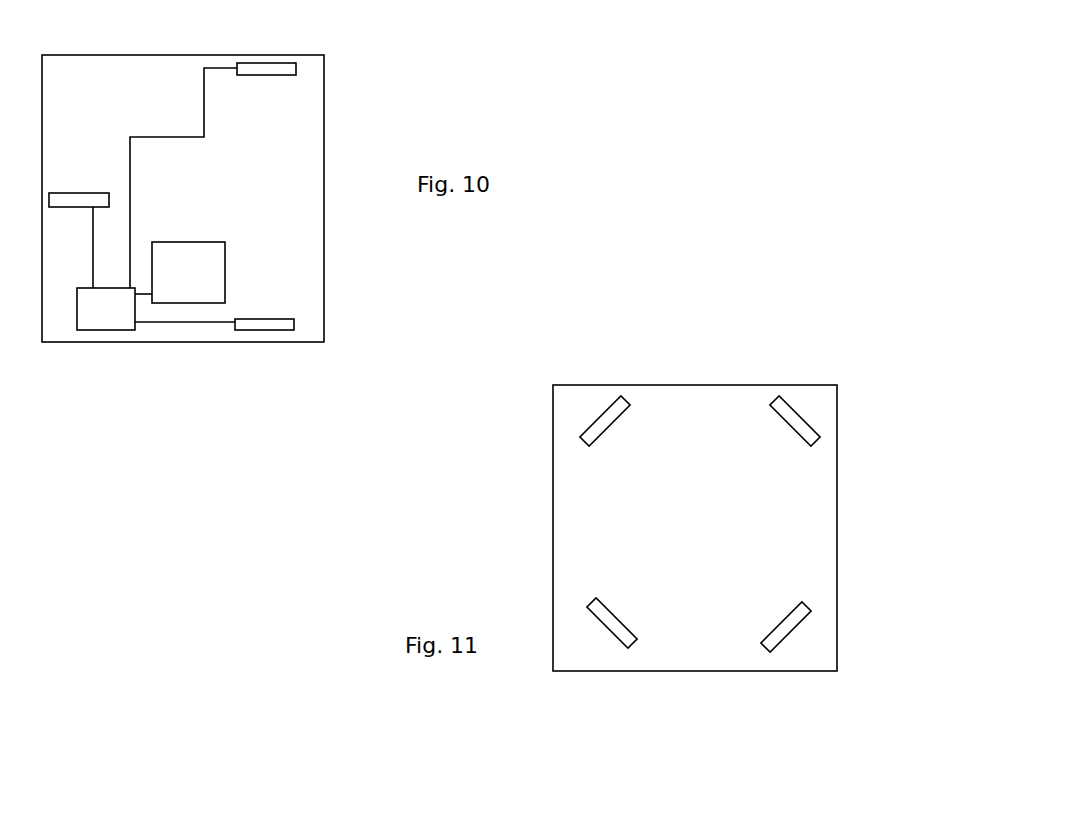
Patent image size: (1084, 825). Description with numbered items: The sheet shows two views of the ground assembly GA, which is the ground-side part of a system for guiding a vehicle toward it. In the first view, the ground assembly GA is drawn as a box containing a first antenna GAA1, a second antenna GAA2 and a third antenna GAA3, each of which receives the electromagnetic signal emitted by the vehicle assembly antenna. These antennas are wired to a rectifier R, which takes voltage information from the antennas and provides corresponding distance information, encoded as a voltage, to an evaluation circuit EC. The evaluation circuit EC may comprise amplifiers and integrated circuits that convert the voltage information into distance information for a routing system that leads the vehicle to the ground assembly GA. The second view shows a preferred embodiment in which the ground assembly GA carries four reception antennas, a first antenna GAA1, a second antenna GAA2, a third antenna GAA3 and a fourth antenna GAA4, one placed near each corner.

In FIG. 10, the ground assembly GA is at (324, 305).
In FIG. 11, the ground assembly GA is at (553, 549).
In FIG. 10, the first antenna GAA1 is at (57, 192).
In FIG. 11, the first antenna GAA1 is at (602, 410).
In FIG. 10, the second antenna GAA2 is at (272, 77).
In FIG. 11, the second antenna GAA2 is at (782, 417).
In FIG. 10, the third antenna GAA3 is at (243, 317).
In FIG. 11, the third antenna GAA3 is at (787, 638).
In FIG. 11, the fourth antenna GAA4 is at (625, 643).
In FIG. 10, the evaluation circuit EC is at (193, 305).
In FIG. 10, the rectifier R is at (112, 332).